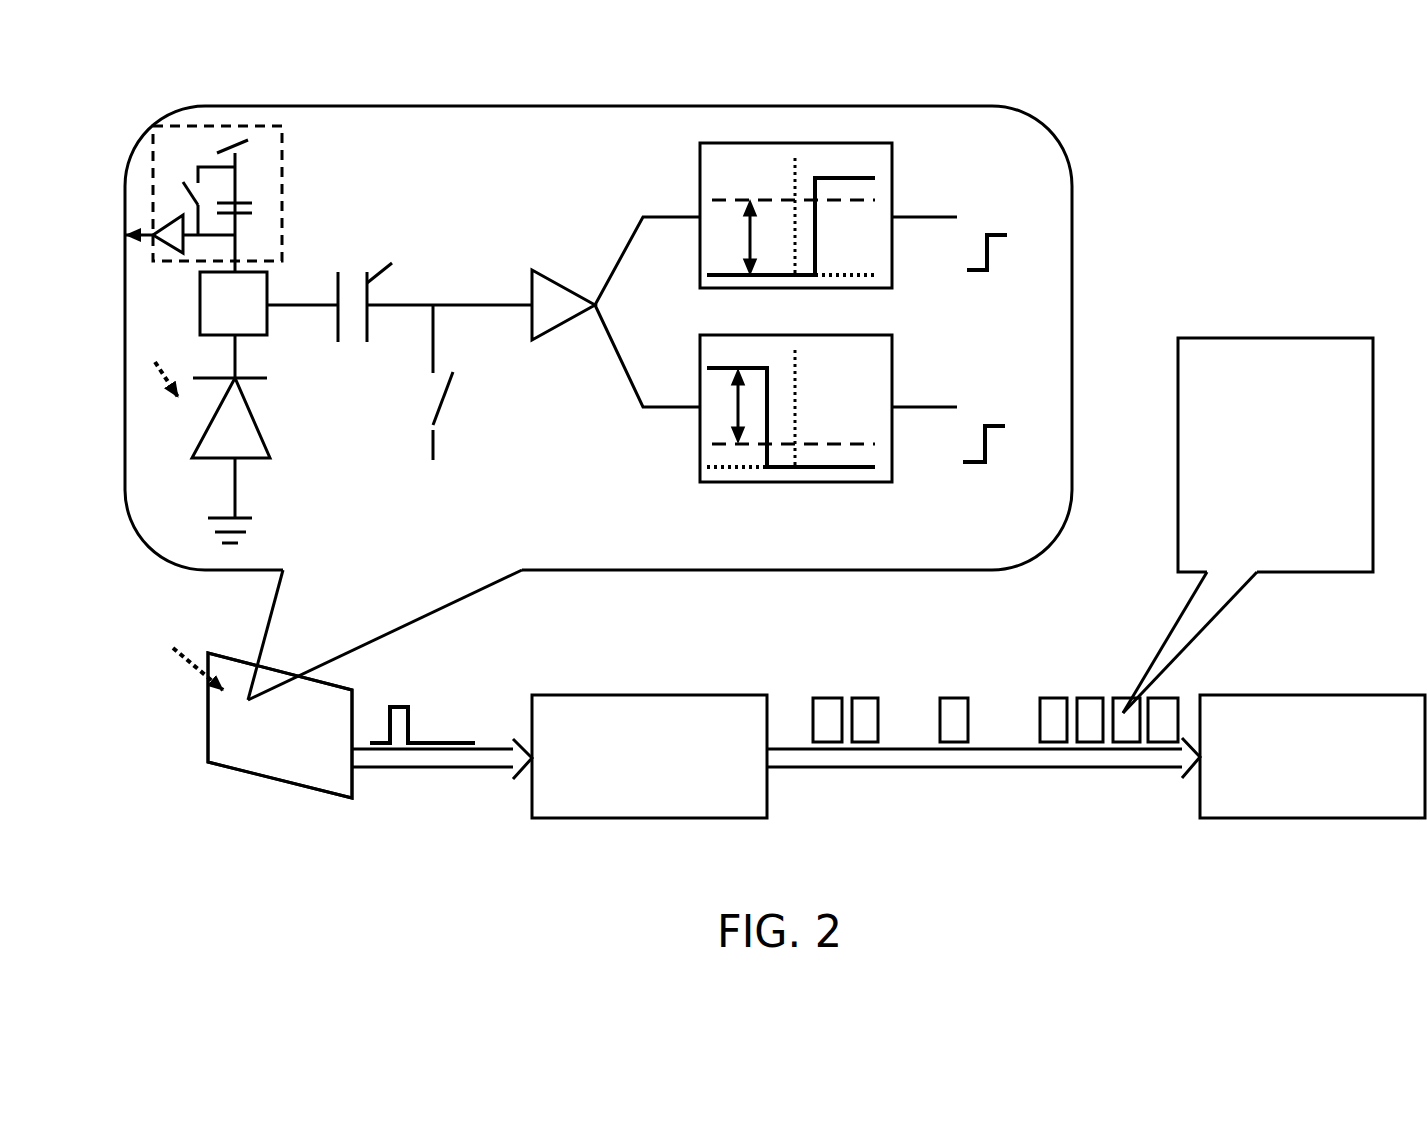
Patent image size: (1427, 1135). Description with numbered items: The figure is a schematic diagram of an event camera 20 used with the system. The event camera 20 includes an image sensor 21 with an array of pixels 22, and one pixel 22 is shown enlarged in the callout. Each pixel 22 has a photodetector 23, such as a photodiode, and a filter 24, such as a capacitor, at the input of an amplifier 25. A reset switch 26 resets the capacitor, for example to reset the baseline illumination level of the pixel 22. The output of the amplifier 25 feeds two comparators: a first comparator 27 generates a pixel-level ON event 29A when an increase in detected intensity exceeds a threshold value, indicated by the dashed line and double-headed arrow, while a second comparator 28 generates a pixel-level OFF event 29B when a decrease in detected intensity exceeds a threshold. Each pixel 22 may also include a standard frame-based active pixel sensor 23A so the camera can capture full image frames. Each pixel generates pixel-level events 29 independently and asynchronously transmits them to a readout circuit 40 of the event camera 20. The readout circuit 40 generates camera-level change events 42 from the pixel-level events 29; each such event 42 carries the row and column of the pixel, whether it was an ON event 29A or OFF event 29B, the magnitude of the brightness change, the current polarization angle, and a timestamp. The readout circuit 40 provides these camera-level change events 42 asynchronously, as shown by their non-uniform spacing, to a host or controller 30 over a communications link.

The event camera 20 is at (565, 653).
The image sensor 21 is at (357, 690).
The pixel 22 is at (150, 120).
The photodetector 23 is at (257, 437).
The active pixel sensor 23A is at (260, 193).
The filter 24 is at (373, 280).
The amplifier 25 is at (553, 283).
The reset switch 26 is at (463, 399).
The first comparator 27 is at (892, 183).
The second comparator 28 is at (892, 370).
The pixel-level events 29 is at (443, 707).
The ON event 29A is at (1048, 222).
The OFF event 29B is at (1048, 413).
The controller 30 is at (1347, 693).
The readout circuit 40 is at (682, 693).
The camera-level change events 42 is at (1332, 335).